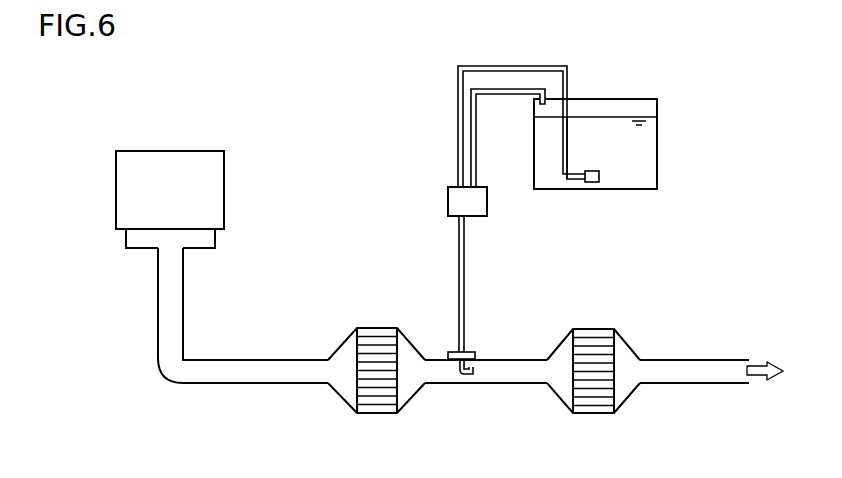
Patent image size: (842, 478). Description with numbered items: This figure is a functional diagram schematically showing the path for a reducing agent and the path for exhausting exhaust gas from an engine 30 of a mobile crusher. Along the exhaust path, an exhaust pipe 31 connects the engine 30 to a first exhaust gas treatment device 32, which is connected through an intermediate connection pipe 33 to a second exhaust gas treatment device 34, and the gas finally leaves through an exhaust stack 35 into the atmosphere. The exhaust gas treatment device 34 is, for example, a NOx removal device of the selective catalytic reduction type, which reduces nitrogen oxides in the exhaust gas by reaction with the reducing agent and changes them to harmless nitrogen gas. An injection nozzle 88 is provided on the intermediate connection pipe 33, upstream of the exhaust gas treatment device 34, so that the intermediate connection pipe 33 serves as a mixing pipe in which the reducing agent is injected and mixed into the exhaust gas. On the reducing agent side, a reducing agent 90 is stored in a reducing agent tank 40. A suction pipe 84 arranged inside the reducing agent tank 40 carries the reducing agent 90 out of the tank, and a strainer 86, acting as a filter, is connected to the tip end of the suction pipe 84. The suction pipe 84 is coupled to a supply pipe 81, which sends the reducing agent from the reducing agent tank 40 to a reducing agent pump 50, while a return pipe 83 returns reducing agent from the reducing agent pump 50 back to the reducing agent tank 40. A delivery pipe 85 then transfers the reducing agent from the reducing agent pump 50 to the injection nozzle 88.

The engine 30 is at (130, 192).
The exhaust pipe 31 is at (238, 372).
The exhaust gas treatment device 32 is at (378, 403).
The intermediate connection pipe 33 is at (496, 372).
The exhaust gas treatment device 34 is at (597, 402).
The exhaust stack 35 is at (700, 372).
The reducing agent tank 40 is at (657, 123).
The reducing agent pump 50 is at (455, 202).
The supply pipe 81 is at (457, 142).
The return pipe 83 is at (477, 143).
The suction pipe 84 is at (567, 139).
The delivery pipe 85 is at (458, 285).
The strainer 86 is at (593, 182).
The injection nozzle 88 is at (467, 348).
The reducing agent 90 is at (645, 146).